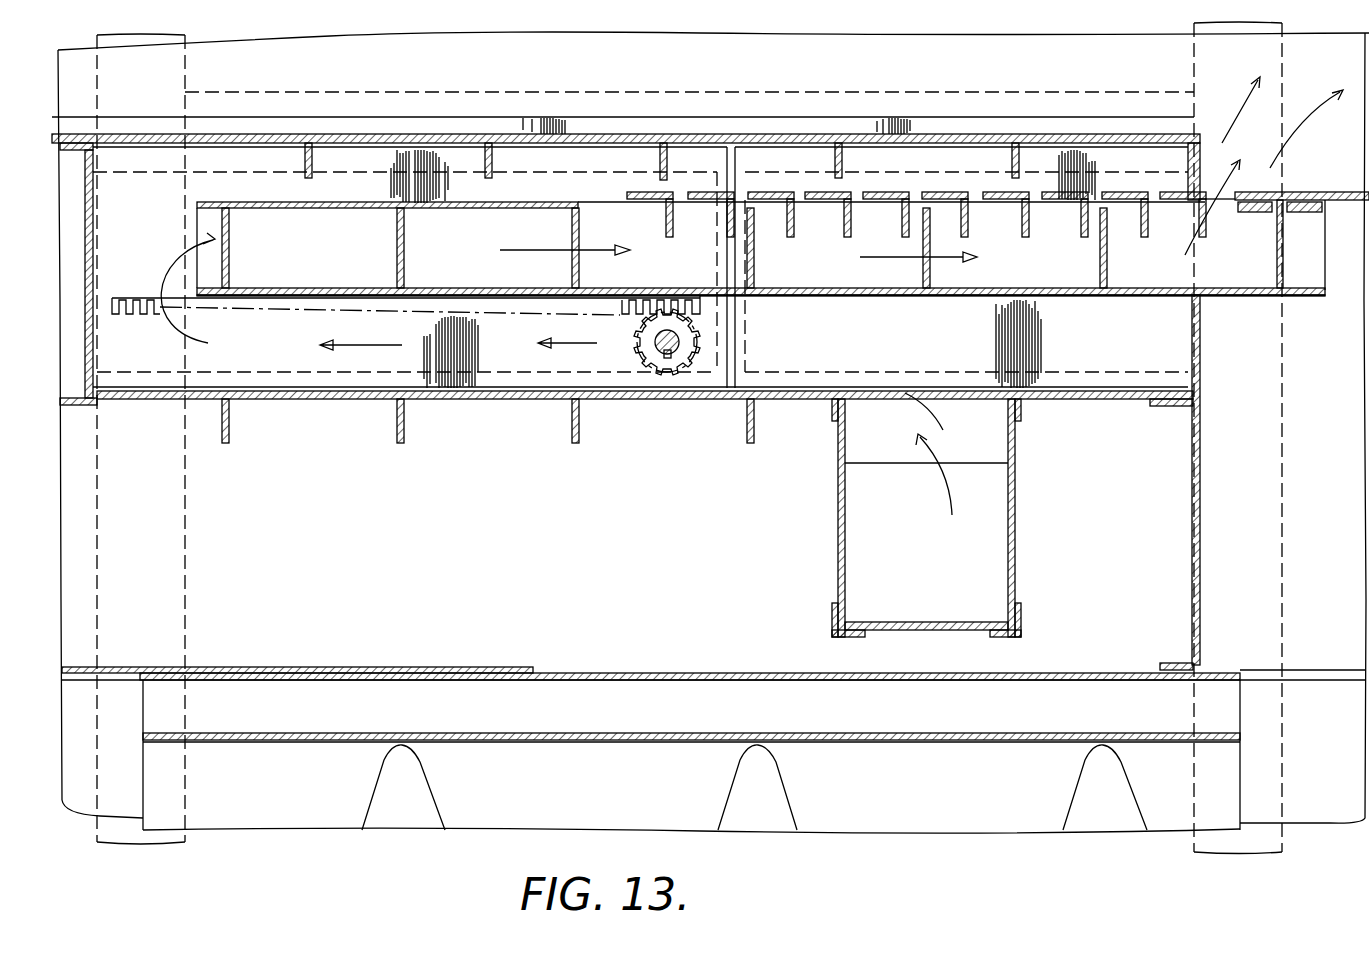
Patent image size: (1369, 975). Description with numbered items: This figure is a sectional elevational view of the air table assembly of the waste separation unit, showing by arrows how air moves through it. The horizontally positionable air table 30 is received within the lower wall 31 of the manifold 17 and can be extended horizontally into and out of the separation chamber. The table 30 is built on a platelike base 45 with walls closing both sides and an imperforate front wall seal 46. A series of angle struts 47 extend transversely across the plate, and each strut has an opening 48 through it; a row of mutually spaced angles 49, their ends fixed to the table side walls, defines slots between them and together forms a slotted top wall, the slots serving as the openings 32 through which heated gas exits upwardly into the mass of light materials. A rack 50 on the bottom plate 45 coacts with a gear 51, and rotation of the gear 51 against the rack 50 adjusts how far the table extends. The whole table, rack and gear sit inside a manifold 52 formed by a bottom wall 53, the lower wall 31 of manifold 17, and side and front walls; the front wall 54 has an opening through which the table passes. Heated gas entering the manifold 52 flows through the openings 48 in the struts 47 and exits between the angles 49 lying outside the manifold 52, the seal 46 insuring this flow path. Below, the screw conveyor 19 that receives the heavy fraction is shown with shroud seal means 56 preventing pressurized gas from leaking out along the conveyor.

The manifold 17 is at (689, 438).
The screw conveyor 19 is at (375, 790).
The air table 30 is at (830, 296).
The lower wall of manifold 31 is at (663, 147).
The openings 32 is at (678, 202).
The platelike base 45 is at (1030, 296).
The front wall seal 46 is at (1283, 266).
The angle struts 47 is at (229, 211).
The opening 48 is at (228, 268).
The angles 49 is at (664, 224).
The rack 50 is at (556, 327).
The gear 51 is at (675, 376).
The manifold 52 is at (322, 400).
The bottom wall 53 is at (495, 400).
The front wall 54 is at (1205, 300).
The shroud seal means 56 is at (890, 675).